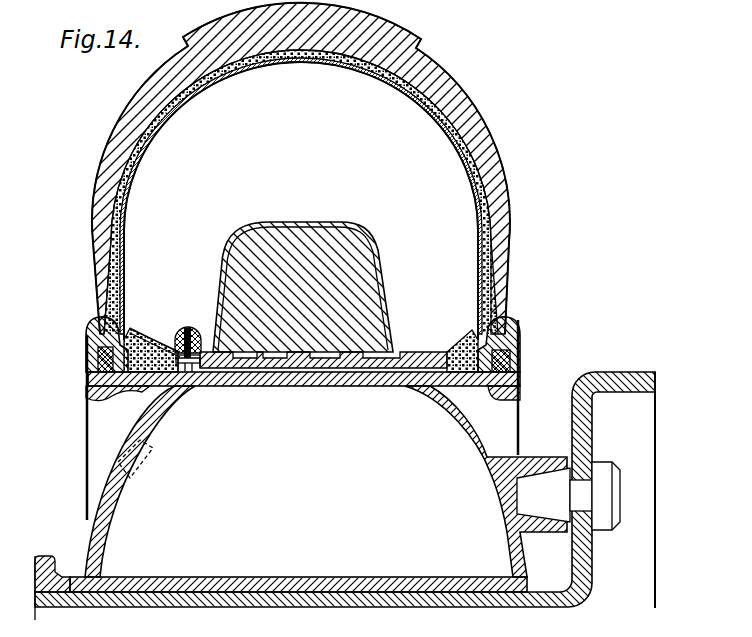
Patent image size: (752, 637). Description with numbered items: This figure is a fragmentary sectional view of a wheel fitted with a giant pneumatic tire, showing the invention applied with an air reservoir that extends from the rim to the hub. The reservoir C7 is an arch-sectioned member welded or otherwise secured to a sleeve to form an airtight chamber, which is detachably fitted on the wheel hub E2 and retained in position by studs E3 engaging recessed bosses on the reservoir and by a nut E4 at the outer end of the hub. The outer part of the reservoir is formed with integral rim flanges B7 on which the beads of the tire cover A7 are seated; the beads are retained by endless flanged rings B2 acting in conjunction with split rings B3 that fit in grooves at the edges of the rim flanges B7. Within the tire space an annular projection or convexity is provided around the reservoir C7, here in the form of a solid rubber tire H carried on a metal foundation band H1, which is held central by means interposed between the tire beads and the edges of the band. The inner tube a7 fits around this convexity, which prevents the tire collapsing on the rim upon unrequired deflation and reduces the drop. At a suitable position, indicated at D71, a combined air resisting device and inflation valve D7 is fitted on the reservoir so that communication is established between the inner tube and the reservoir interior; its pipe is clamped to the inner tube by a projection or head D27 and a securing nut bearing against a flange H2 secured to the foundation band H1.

The tire cover A7 is at (504, 230).
The inner tube a7 is at (263, 222).
The solid rubber tire H is at (362, 272).
The metal foundation band H1 is at (350, 362).
The flange H2 is at (200, 358).
The projection or head D27 is at (190, 326).
The endless flanged rings B2 is at (543, 316).
The split rings B3 is at (547, 352).
The rim flanges B7 is at (538, 402).
The combined air resisting device and inflation valve D7 is at (133, 413).
The position of the air resisting device D71 is at (133, 472).
The air reservoir C7 is at (432, 410).
The studs E3 is at (543, 498).
The wheel hub E2 is at (527, 598).
The nut E4 is at (44, 567).